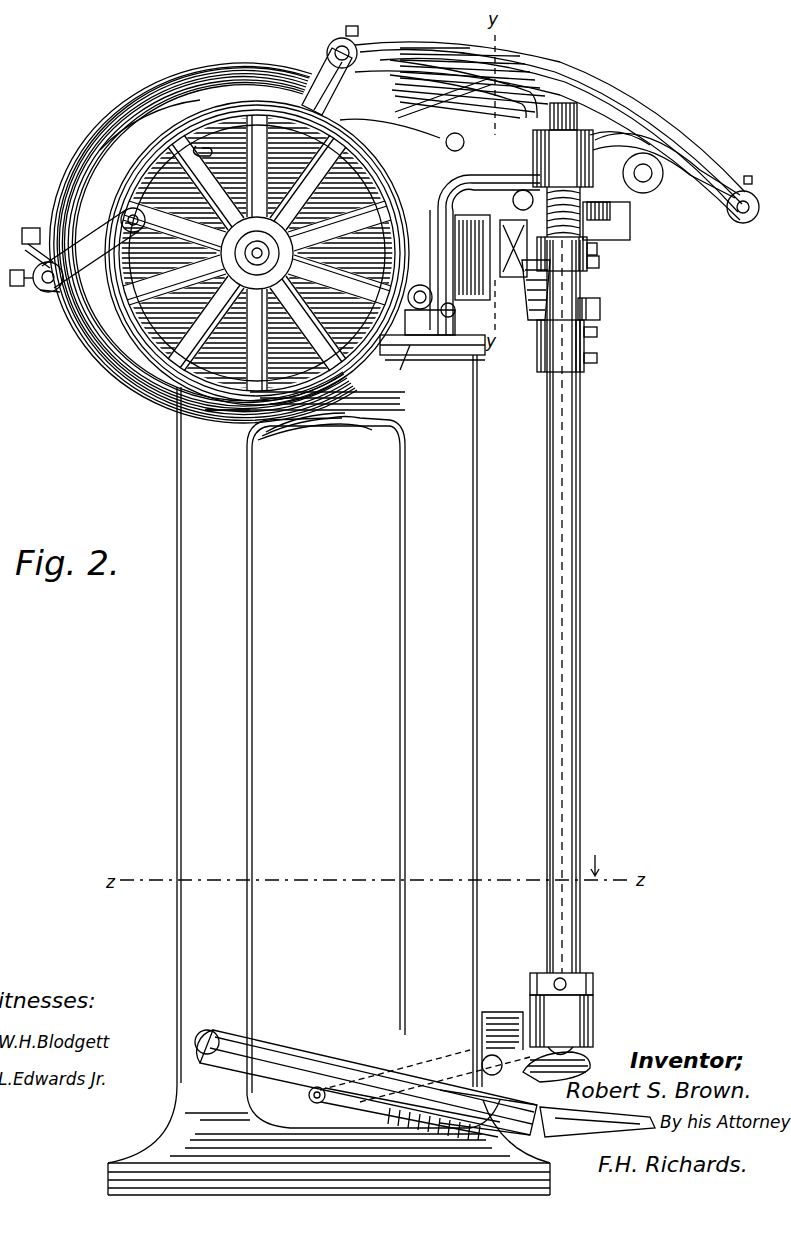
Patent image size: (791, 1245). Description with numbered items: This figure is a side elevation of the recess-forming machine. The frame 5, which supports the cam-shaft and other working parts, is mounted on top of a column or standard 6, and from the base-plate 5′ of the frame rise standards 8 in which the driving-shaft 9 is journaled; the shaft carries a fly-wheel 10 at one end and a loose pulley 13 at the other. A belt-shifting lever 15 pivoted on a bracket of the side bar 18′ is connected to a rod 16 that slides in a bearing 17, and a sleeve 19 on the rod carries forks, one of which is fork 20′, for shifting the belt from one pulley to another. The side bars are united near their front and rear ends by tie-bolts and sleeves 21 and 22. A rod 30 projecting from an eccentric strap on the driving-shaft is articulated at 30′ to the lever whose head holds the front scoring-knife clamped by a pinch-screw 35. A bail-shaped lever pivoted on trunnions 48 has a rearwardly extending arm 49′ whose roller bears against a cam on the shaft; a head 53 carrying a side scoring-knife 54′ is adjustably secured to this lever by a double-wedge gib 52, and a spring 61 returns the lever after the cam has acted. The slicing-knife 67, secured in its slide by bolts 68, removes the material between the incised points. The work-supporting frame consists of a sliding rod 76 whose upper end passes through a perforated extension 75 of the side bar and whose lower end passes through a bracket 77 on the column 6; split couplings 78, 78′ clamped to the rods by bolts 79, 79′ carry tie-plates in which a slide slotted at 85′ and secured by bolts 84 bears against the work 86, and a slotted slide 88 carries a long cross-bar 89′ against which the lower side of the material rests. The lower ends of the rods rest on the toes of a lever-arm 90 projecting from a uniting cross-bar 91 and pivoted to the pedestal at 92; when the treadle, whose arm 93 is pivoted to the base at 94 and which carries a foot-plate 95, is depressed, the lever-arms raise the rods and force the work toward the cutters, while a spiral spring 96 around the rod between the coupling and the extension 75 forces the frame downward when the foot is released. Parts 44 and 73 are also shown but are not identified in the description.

The frame 5 is at (340, 275).
The base-plate 5′ is at (410, 360).
The column or standard 6 is at (329, 775).
The standards 8 is at (257, 253).
The driving-shaft 9 is at (246, 250).
The fly-wheel 10 is at (208, 108).
The loose pulley 13 is at (232, 398).
The lever 15 is at (417, 100).
The rod 16 is at (45, 283).
The bearing 17 is at (30, 283).
The side bar 18′ is at (443, 123).
The sleeve 19 is at (56, 293).
The fork 20′ is at (102, 140).
The tie-bolt and sleeve 21 is at (667, 177).
The tie-bolt and sleeve 22 is at (128, 216).
The rod 30 is at (325, 85).
The articulation 30′ is at (342, 45).
The pinch-screw 35 is at (563, 145).
The stud 44 is at (446, 142).
The trunnions 48 is at (398, 347).
The rearwardly-extending arm 49′ is at (203, 147).
The double-wedge gib 52 is at (268, 98).
The head 53 is at (382, 137).
The side scoring or incising knife 54′ is at (500, 205).
The spring 61 is at (160, 117).
The slicing-knife 67 is at (458, 178).
The bolts 68 is at (430, 230).
The arch shading 73 is at (297, 395).
The perforated extension 75 is at (592, 135).
The sliding rod 76 is at (575, 637).
The bracket 77 is at (590, 1017).
The split coupling 78 is at (590, 267).
The split coupling 78′ is at (578, 362).
The bolt 79 is at (598, 357).
The bolt 79′ is at (600, 262).
The bolts 84 is at (690, 197).
The slot 85′ is at (630, 222).
The work 86 is at (600, 250).
The slotted slide 88 is at (600, 312).
The cross-bar 89′ is at (532, 322).
The lever-arm 90 is at (582, 1066).
The uniting cross-bar 91 is at (310, 1096).
The pivot 92 is at (494, 1055).
The treadle arm 93 is at (368, 1082).
The pivot 94 is at (209, 1032).
The foot-plate 95 is at (537, 1112).
The spiral spring 96 is at (648, 153).